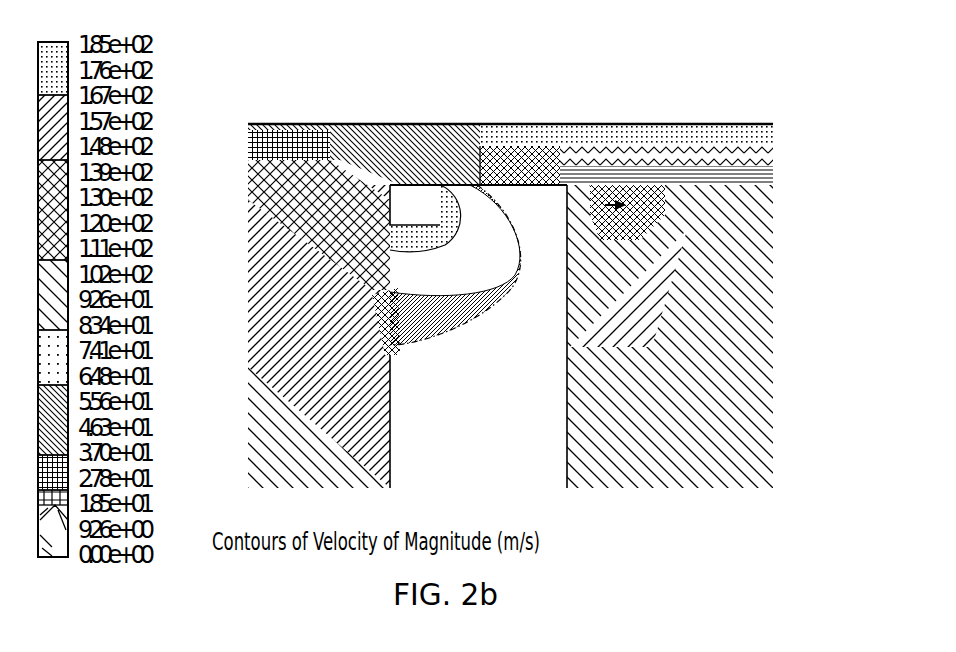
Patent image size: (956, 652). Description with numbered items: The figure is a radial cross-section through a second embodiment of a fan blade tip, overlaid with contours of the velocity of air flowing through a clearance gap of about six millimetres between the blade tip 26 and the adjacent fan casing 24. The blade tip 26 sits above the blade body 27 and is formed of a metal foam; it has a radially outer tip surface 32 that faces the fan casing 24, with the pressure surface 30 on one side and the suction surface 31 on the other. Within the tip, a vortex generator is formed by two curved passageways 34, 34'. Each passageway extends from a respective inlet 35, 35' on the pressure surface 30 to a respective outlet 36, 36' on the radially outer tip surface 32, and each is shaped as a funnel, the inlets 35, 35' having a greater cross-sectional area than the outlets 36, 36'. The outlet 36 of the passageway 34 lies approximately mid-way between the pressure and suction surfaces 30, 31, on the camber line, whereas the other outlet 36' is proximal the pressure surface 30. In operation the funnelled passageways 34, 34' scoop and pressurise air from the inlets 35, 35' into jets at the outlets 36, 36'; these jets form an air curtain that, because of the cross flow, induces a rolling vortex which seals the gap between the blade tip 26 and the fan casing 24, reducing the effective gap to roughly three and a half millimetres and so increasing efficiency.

The fan casing 24 is at (700, 124).
The blade tip 26 is at (657, 207).
The blade body 27 is at (448, 458).
The pressure surface 30 is at (385, 415).
The suction surface 31 is at (567, 408).
The radially outer tip surface 32 is at (372, 124).
The passageway 34 is at (609, 282).
The passageway 34' is at (261, 129).
The inlet 35 is at (294, 331).
The inlet 35' is at (279, 225).
The outlet 36 is at (519, 107).
The outlet 36' is at (433, 147).